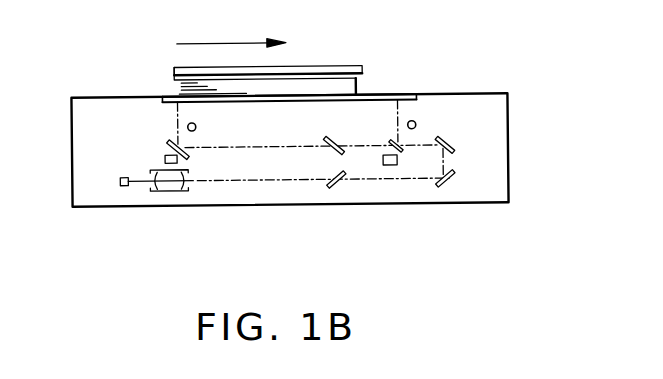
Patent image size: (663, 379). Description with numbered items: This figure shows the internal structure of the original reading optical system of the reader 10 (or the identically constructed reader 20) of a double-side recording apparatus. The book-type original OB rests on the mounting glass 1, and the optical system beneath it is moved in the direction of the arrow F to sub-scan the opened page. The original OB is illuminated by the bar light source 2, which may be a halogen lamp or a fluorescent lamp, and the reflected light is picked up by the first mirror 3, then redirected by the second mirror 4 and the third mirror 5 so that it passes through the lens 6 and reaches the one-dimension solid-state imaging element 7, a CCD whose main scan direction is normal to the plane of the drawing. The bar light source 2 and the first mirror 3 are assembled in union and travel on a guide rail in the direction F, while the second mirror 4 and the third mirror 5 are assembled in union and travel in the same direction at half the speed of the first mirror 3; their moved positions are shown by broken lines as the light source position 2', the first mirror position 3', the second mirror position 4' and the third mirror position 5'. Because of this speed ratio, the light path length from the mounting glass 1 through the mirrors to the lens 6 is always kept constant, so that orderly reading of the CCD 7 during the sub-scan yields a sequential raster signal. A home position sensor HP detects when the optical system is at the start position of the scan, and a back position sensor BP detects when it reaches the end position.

The mounting glass 1 is at (398, 94).
The bar light source 2 is at (211, 122).
The moved position of the bar light source 2' is at (435, 120).
The first mirror 3 is at (147, 132).
The moved position of the first mirror 3' is at (404, 198).
The second mirror 4 is at (352, 131).
The moved position of the second mirror 4' is at (466, 152).
The third mirror 5 is at (327, 214).
The moved position of the third mirror 5' is at (458, 213).
The lens 6 is at (170, 191).
The one-dimension solid-state imaging element 7 is at (117, 180).
The reader 10 is at (343, 148).
The reader 20 is at (509, 102).
The home position sensor HP is at (163, 156).
The back position sensor BP is at (382, 161).
The original OB is at (325, 66).
The direction of movement F is at (240, 41).